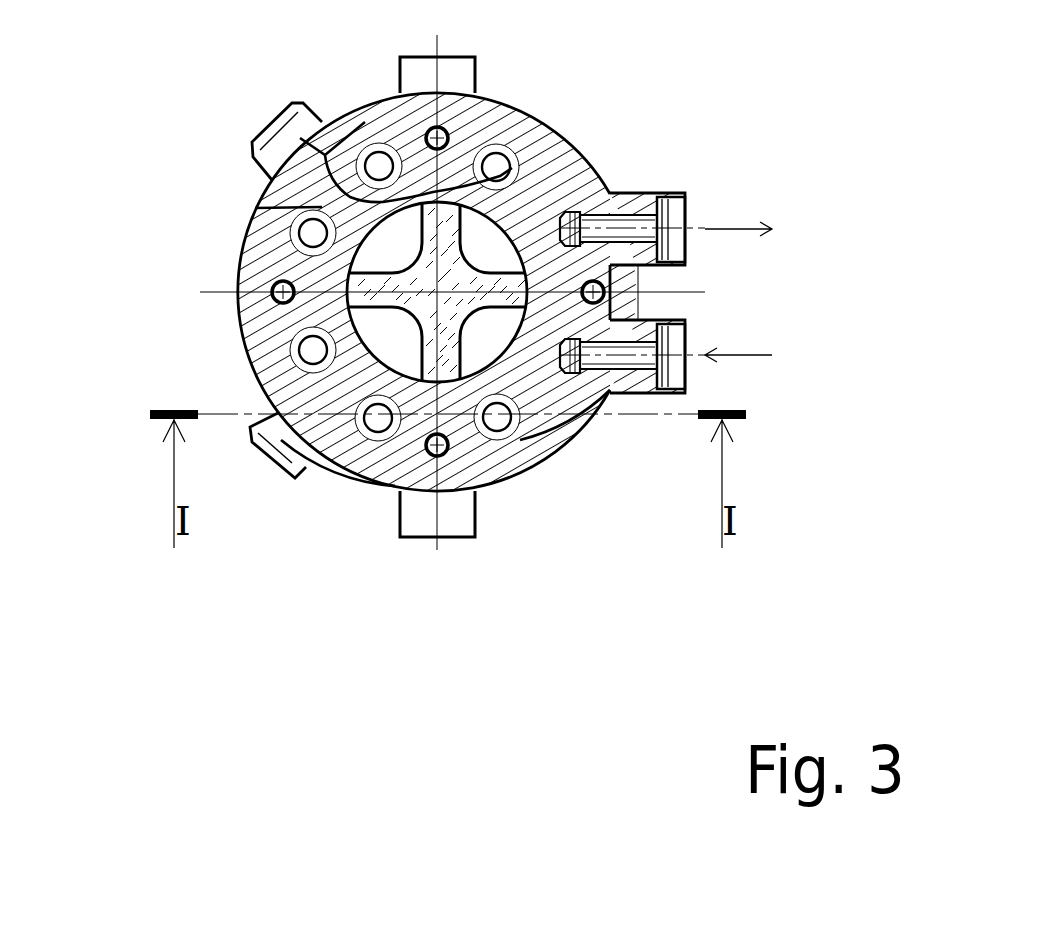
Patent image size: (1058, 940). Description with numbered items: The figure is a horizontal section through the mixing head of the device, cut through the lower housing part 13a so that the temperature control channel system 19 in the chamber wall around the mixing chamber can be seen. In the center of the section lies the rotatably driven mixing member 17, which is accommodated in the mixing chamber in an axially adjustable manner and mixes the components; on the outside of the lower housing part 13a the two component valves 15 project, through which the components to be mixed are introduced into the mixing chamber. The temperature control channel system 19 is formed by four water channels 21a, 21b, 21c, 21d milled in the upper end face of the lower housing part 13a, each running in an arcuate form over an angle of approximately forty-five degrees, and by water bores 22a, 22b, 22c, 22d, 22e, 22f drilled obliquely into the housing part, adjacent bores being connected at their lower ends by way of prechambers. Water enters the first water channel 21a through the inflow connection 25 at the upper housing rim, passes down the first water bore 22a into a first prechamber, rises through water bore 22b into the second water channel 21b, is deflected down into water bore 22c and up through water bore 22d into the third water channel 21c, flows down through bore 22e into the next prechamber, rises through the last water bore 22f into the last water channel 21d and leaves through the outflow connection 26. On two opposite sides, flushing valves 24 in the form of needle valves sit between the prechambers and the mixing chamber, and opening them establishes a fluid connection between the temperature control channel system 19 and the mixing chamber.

The lower housing part 13a is at (505, 108).
The component valve 15 is at (250, 140).
The mixing member 17 is at (417, 382).
The temperature control channel system 19 is at (287, 110).
The first water channel 21a is at (540, 390).
The second water channel 21b is at (337, 397).
The third water channel 21c is at (255, 203).
The last water channel 21d is at (537, 180).
The first water bore 22a is at (287, 320).
The water bore 22b is at (376, 422).
The water bore 22c is at (310, 352).
The water bore 22d is at (310, 233).
The water bore 22e is at (379, 166).
The last water bore 22f is at (497, 167).
The flushing valve 24 is at (447, 75).
The inflow connection 25 is at (677, 372).
The outflow connection 26 is at (677, 245).